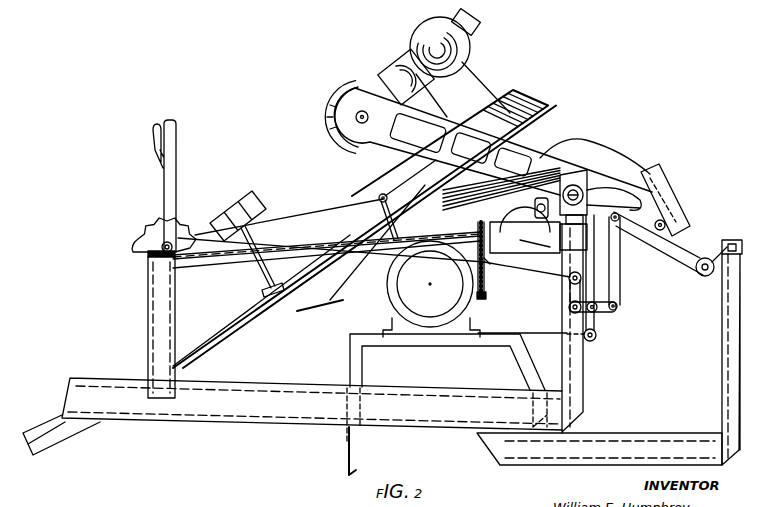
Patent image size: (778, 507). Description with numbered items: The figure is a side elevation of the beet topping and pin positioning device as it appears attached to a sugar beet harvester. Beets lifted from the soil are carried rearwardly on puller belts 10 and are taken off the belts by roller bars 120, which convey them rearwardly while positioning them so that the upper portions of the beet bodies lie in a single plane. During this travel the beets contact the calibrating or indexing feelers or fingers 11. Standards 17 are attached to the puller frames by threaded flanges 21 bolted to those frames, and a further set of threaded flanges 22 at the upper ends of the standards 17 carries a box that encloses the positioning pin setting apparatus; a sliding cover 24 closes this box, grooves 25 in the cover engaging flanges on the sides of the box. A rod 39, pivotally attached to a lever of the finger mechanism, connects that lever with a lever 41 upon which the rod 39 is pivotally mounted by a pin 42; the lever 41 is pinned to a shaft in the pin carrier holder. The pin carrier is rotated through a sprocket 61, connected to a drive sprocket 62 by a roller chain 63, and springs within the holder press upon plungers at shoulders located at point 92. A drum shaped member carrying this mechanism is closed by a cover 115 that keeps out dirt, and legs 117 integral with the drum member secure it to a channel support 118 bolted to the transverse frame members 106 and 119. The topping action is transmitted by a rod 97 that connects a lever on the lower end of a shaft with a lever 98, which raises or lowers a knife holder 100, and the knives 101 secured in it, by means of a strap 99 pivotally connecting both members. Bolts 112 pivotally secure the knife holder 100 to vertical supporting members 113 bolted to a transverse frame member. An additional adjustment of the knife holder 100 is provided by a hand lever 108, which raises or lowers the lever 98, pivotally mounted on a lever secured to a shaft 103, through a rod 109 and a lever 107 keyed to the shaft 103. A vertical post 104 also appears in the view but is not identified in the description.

The puller belts 10 is at (545, 96).
The feelers or fingers 11 is at (297, 312).
The standards 17 is at (260, 265).
The flanges 21 is at (263, 292).
The flanges 22 is at (331, 239).
The sliding cover 24 is at (228, 207).
The grooves 25 is at (208, 241).
The rod 39 is at (318, 202).
The lever 41 is at (382, 208).
The pin 42 is at (383, 194).
The sprocket 61 is at (486, 296).
The drive sprocket 62 is at (477, 230).
The roller chain 63 is at (495, 263).
The shoulder point 92 is at (606, 297).
The rod 97 is at (530, 334).
The lever 98 is at (597, 330).
The strap 99 is at (621, 285).
The knife holder 100 is at (648, 252).
The knives 101 is at (593, 239).
The shaft 103 is at (572, 311).
The post 104 is at (584, 393).
The transverse frame member 106 is at (543, 440).
The lever 107 is at (568, 288).
The hand lever 108 is at (170, 172).
The rod 109 is at (553, 275).
The bolts 112 is at (742, 250).
The vertical supporting members 113 is at (742, 356).
The cover 115 is at (394, 284).
The legs 117 is at (392, 333).
The channel support 118 is at (470, 352).
The transverse frame member 119 is at (352, 470).
The roller bars 120 is at (470, 194).